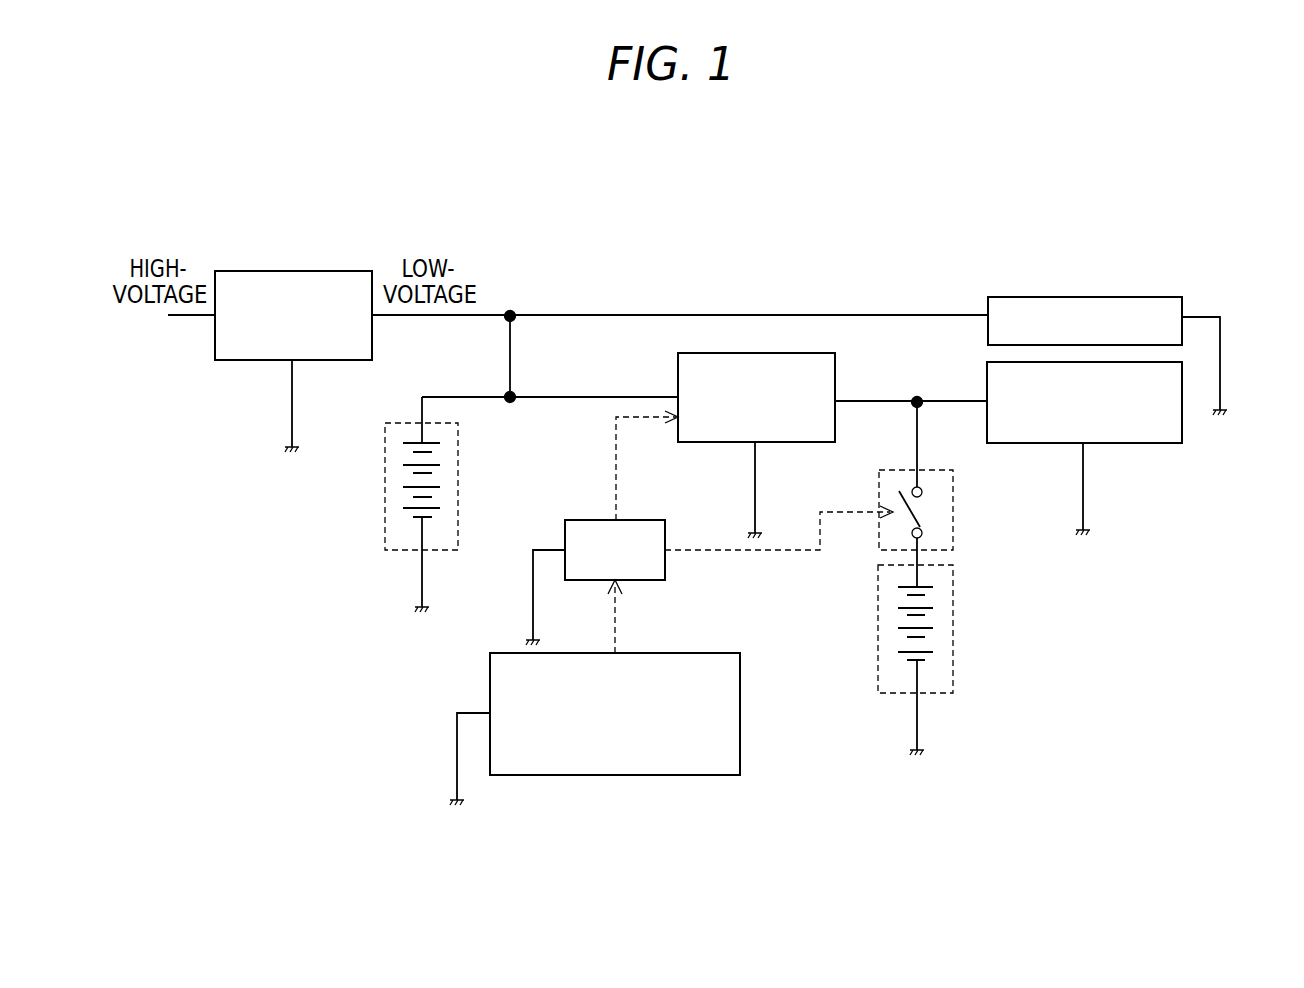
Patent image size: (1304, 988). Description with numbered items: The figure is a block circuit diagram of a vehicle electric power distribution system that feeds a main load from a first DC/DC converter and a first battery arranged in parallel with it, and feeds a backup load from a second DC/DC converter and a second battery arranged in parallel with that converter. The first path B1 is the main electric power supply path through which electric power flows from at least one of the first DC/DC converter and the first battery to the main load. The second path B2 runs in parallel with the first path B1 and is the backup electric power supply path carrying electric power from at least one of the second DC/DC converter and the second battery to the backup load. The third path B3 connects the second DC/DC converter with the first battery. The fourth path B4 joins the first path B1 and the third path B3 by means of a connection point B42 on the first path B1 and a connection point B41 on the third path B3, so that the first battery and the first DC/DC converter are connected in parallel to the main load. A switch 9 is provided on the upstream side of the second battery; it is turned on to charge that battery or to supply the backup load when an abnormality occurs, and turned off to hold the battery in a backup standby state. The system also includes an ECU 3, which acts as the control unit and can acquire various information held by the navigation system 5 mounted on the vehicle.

The ECU 3 is at (565, 520).
The navigation system 5 is at (740, 713).
The switch 9 is at (878, 479).
The first path B1 is at (790, 308).
The second path B2 is at (956, 410).
The third path B3 is at (591, 404).
The fourth path B4 is at (488, 352).
The connection point B41 is at (520, 389).
The connection point B42 is at (511, 306).